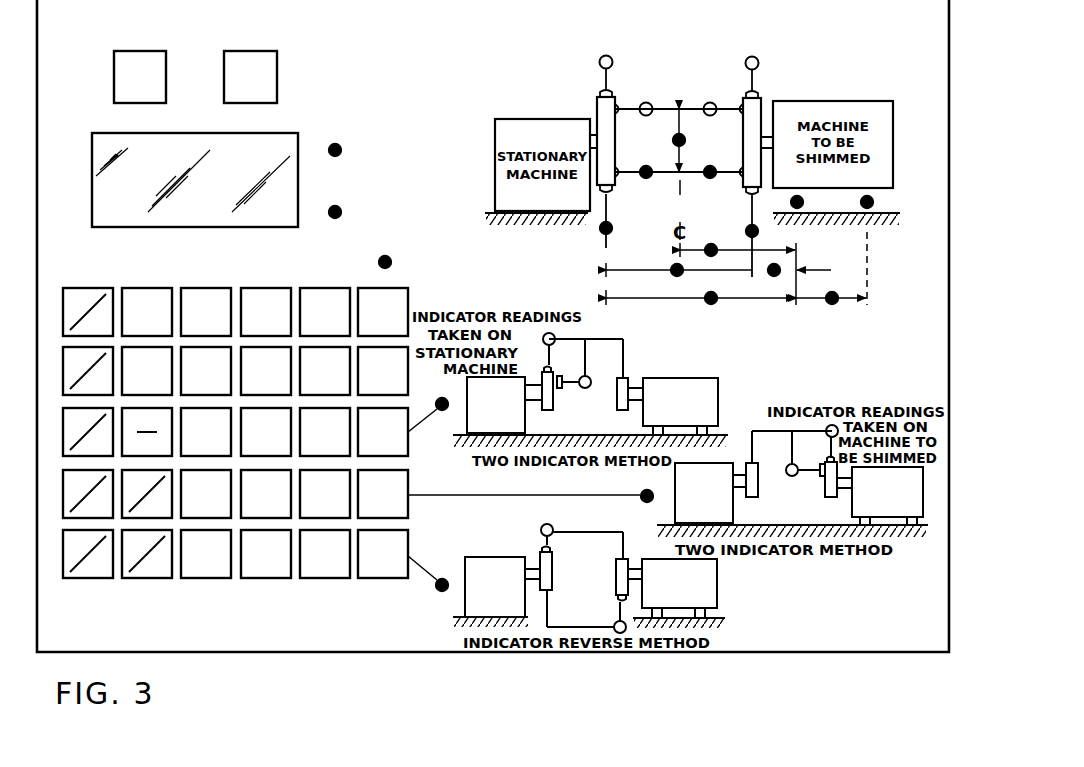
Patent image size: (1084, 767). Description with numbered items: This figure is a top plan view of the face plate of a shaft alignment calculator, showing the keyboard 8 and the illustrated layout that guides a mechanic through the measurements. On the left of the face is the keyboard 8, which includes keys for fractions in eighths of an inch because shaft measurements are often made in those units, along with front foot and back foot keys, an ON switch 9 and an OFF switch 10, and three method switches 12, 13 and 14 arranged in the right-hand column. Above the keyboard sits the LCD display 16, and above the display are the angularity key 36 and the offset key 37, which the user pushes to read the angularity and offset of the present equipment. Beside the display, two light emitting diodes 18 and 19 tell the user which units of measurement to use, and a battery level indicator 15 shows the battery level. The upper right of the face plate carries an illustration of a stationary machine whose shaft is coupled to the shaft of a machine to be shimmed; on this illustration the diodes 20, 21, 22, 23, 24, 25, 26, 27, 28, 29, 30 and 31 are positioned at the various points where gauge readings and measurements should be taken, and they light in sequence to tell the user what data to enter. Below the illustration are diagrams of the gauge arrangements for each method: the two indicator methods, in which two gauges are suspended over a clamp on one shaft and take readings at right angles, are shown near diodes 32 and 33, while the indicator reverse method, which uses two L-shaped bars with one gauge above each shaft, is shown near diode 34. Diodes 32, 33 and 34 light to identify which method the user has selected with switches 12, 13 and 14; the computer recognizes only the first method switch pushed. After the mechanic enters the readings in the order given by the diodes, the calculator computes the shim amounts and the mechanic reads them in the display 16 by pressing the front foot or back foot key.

The keyboard 8 is at (83, 272).
The ON switch 9 is at (408, 302).
The OFF switch 10 is at (408, 389).
The method switch 12 is at (400, 447).
The method switch 13 is at (408, 506).
The method switch 14 is at (382, 574).
The battery level indicator 15 is at (379, 262).
The LCD display 16 is at (188, 218).
The light emitting diode 18 is at (337, 143).
The light emitting diode 19 is at (337, 205).
The light emitting diode 20 is at (670, 271).
The light emitting diode 21 is at (768, 274).
The light emitting diode 22 is at (834, 305).
The light emitting diode 23 is at (752, 225).
The light emitting diode 24 is at (599, 230).
The light emitting diode 25 is at (686, 140).
The light emitting diode 26 is at (708, 179).
The light emitting diode 27 is at (713, 305).
The light emitting diode 28 is at (646, 166).
The light emitting diode 29 is at (804, 202).
The light emitting diode 30 is at (874, 202).
The light emitting diode 31 is at (710, 228).
The light emitting diode 32 is at (443, 411).
The light emitting diode 33 is at (644, 502).
The light emitting diode 34 is at (446, 579).
The angularity key 36 is at (144, 52).
The offset key 37 is at (254, 56).